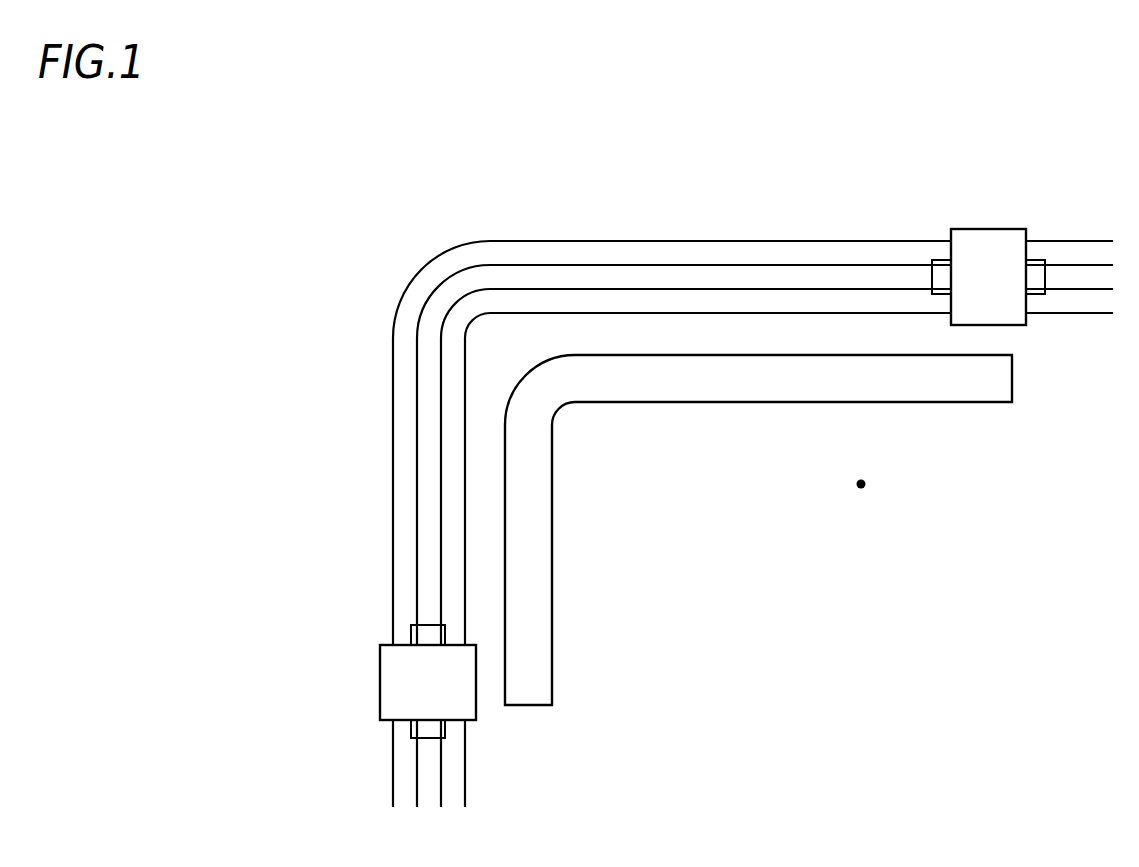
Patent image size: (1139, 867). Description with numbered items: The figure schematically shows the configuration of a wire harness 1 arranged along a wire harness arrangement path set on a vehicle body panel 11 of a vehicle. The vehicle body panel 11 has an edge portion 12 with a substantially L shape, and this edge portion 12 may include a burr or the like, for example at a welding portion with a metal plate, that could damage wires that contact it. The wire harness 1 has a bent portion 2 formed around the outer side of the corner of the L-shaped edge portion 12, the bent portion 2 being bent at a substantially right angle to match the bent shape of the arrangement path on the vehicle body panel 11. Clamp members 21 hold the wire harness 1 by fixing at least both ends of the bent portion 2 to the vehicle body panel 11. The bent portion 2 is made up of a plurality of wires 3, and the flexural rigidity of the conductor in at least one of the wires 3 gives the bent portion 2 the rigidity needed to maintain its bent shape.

The wire harness 1 is at (788, 228).
The bent portion 2 is at (420, 265).
The wires 3 is at (612, 314).
The clamp members 21 is at (998, 233).
The edge portion 12 is at (698, 392).
The vehicle body panel 11 is at (861, 484).